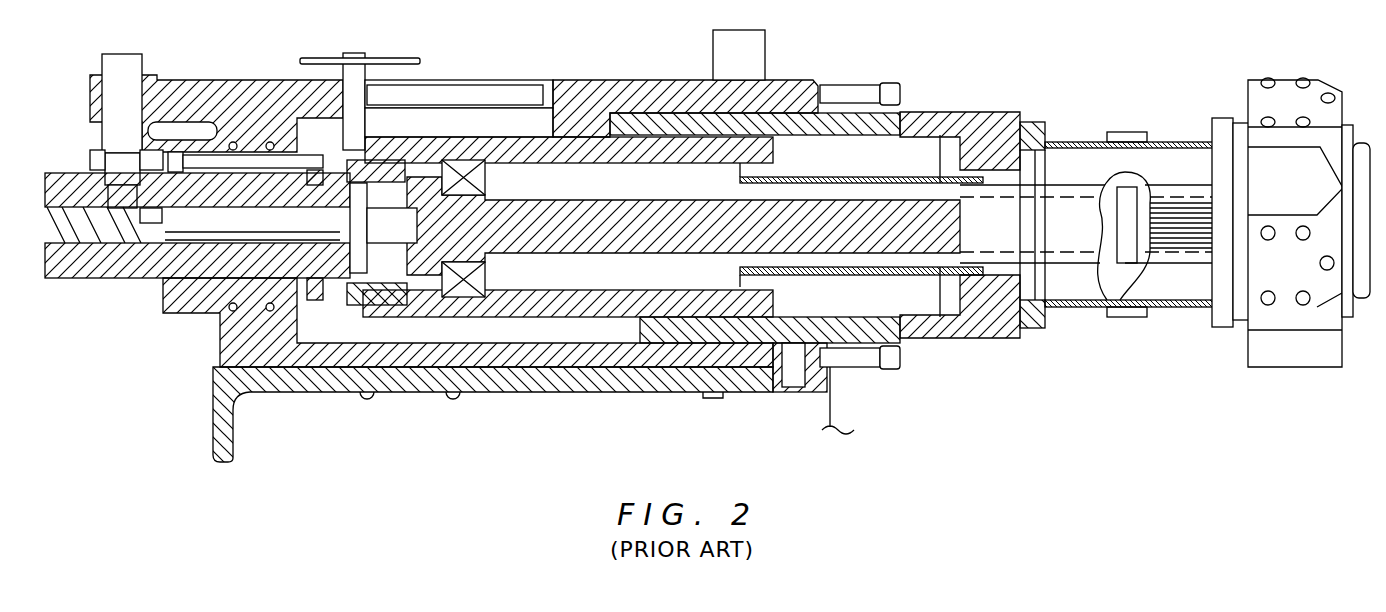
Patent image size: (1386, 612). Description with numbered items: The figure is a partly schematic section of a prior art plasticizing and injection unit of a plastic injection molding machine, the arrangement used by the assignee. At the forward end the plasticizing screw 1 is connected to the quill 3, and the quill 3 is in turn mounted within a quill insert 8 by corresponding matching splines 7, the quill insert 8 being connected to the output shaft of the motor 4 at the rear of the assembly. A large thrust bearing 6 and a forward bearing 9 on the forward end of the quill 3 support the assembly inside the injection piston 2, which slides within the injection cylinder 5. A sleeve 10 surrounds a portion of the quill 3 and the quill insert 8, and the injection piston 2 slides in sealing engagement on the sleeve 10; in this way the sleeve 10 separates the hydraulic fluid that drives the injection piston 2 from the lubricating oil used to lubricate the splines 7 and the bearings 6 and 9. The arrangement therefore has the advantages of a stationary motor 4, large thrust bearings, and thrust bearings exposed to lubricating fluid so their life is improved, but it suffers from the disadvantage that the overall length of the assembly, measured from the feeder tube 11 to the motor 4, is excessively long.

The plasticizing screw 1 is at (178, 233).
The injection piston 2 is at (575, 143).
The quill 3 is at (668, 222).
The motor 4 is at (1337, 163).
The injection cylinder 5 is at (848, 120).
The thrust bearing 6 is at (465, 173).
The splines 7 is at (948, 193).
The quill insert 8 is at (1057, 190).
The forward bearing 9 is at (390, 157).
The sleeve 10 is at (903, 177).
The feeder tube 11 is at (118, 202).